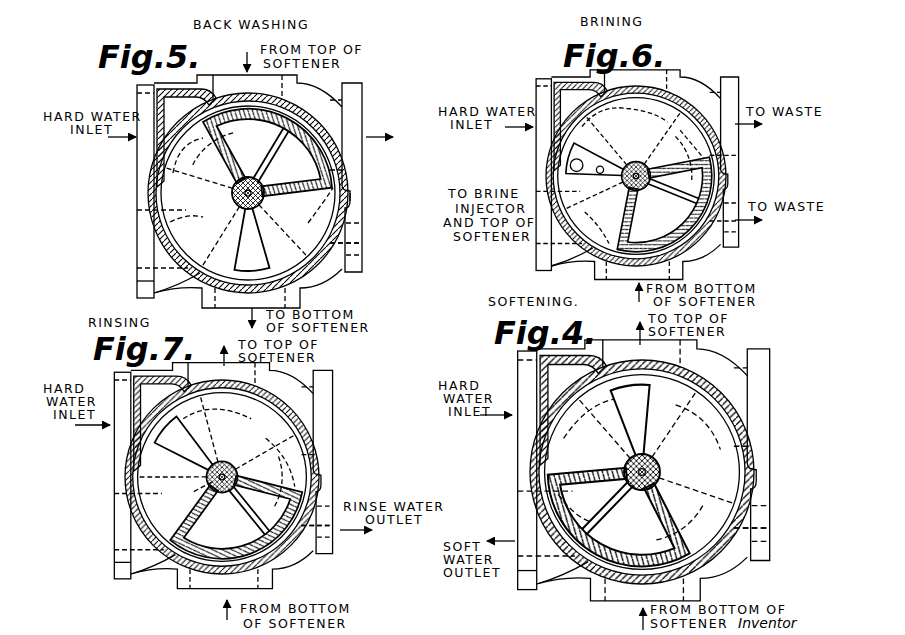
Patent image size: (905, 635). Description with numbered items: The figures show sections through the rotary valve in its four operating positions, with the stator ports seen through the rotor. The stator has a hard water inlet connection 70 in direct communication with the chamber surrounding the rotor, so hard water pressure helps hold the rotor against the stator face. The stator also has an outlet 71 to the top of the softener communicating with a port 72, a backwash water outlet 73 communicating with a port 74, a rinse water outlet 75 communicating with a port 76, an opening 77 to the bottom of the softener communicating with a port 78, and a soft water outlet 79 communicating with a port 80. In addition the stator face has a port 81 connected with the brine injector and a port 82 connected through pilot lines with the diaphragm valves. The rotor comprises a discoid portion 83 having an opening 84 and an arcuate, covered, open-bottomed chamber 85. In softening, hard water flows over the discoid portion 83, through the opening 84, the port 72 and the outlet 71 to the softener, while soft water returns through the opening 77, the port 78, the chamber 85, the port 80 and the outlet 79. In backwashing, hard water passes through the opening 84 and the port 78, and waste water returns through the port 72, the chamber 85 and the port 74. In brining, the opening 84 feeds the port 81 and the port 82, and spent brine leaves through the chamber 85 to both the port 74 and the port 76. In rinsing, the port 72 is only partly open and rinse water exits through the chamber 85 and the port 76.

In FIG. 5, the hard water inlet connection 70 is at (141, 191).
In FIG. 6, the hard water inlet connection 70 is at (546, 163).
In FIG. 7, the hard water inlet connection 70 is at (119, 469).
In FIG. 4, the hard water inlet connection 70 is at (520, 470).
In FIG. 5, the outlet 71 is at (274, 84).
In FIG. 4, the outlet 71 is at (639, 353).
In FIG. 5, the port 72 is at (194, 168).
In FIG. 6, the port 72 is at (625, 127).
In FIG. 7, the port 72 is at (217, 429).
In FIG. 4, the port 72 is at (589, 430).
In FIG. 5, the backwash water outlet 73 is at (370, 171).
In FIG. 6, the backwash water outlet 73 is at (750, 154).
In FIG. 7, the backwash water outlet 73 is at (339, 461).
In FIG. 4, the backwash water outlet 73 is at (769, 455).
In FIG. 5, the port 74 is at (357, 200).
In FIG. 6, the port 74 is at (699, 108).
In FIG. 7, the port 74 is at (278, 462).
In FIG. 4, the port 74 is at (698, 433).
In FIG. 5, the rinse water outlet 75 is at (378, 209).
In FIG. 5, the port 76 is at (368, 245).
In FIG. 6, the port 76 is at (744, 171).
In FIG. 7, the port 76 is at (338, 498).
In FIG. 4, the port 76 is at (724, 513).
In FIG. 5, the opening 77 is at (288, 293).
In FIG. 6, the opening 77 is at (637, 284).
In FIG. 7, the opening 77 is at (219, 602).
In FIG. 4, the opening 77 is at (639, 606).
In FIG. 5, the port 78 is at (184, 294).
In FIG. 6, the port 78 is at (572, 271).
In FIG. 7, the port 78 is at (154, 583).
In FIG. 4, the port 78 is at (564, 589).
In FIG. 5, the soft water outlet 79 is at (127, 278).
In FIG. 7, the soft water outlet 79 is at (102, 556).
In FIG. 4, the soft water outlet 79 is at (506, 591).
In FIG. 5, the port 80 is at (151, 232).
In FIG. 6, the port 80 is at (559, 239).
In FIG. 7, the port 80 is at (182, 499).
In FIG. 4, the port 80 is at (581, 506).
In FIG. 6, the port 81 is at (540, 168).
In FIG. 6, the port 82 is at (603, 186).
In FIG. 5, the discoid portion 83 is at (155, 138).
In FIG. 5, the opening 84 is at (254, 244).
In FIG. 6, the opening 84 is at (561, 167).
In FIG. 7, the opening 84 is at (180, 450).
In FIG. 4, the opening 84 is at (629, 415).
In FIG. 5, the arcuate, covered, open-bottomed chamber 85 is at (295, 154).
In FIG. 6, the arcuate, covered, open-bottomed chamber 85 is at (668, 204).
In FIG. 7, the arcuate, covered, open-bottomed chamber 85 is at (241, 519).
In FIG. 4, the arcuate, covered, open-bottomed chamber 85 is at (589, 515).